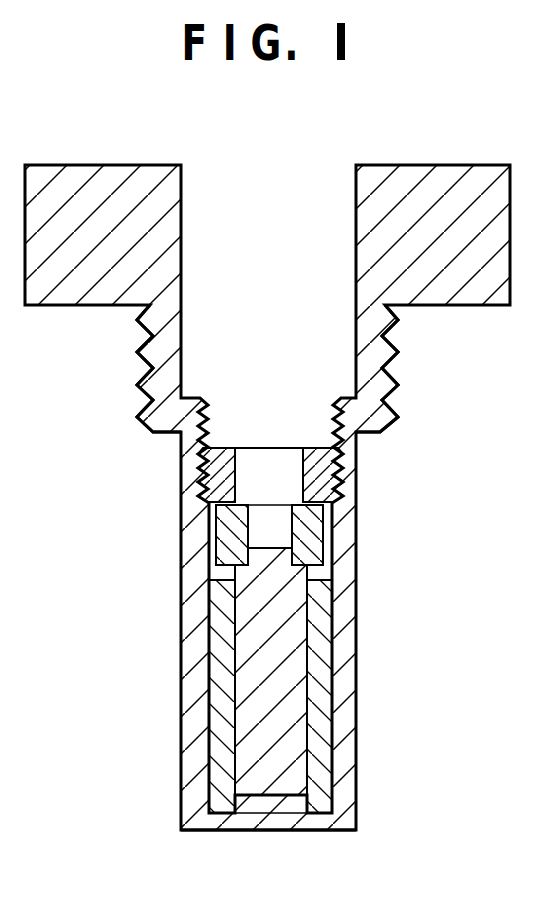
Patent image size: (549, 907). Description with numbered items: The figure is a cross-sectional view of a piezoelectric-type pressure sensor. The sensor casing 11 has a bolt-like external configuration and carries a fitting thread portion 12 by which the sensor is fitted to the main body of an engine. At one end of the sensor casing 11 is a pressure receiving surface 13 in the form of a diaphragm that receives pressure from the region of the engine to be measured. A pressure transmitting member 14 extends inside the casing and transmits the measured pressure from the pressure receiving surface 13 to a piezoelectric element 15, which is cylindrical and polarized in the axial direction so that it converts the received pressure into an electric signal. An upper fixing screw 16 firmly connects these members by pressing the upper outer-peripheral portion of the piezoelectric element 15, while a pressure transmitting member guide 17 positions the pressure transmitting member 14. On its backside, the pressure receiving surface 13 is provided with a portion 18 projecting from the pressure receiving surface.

The sensor casing 11 is at (181, 638).
The fitting thread portion 12 is at (398, 352).
The pressure receiving surface 13 is at (305, 832).
The pressure transmitting member 14 is at (310, 647).
The piezoelectric element 15 is at (326, 547).
The upper fixing screw 16 is at (336, 478).
The pressure transmitting member guide 17 is at (334, 766).
The projecting portion 18 is at (307, 800).